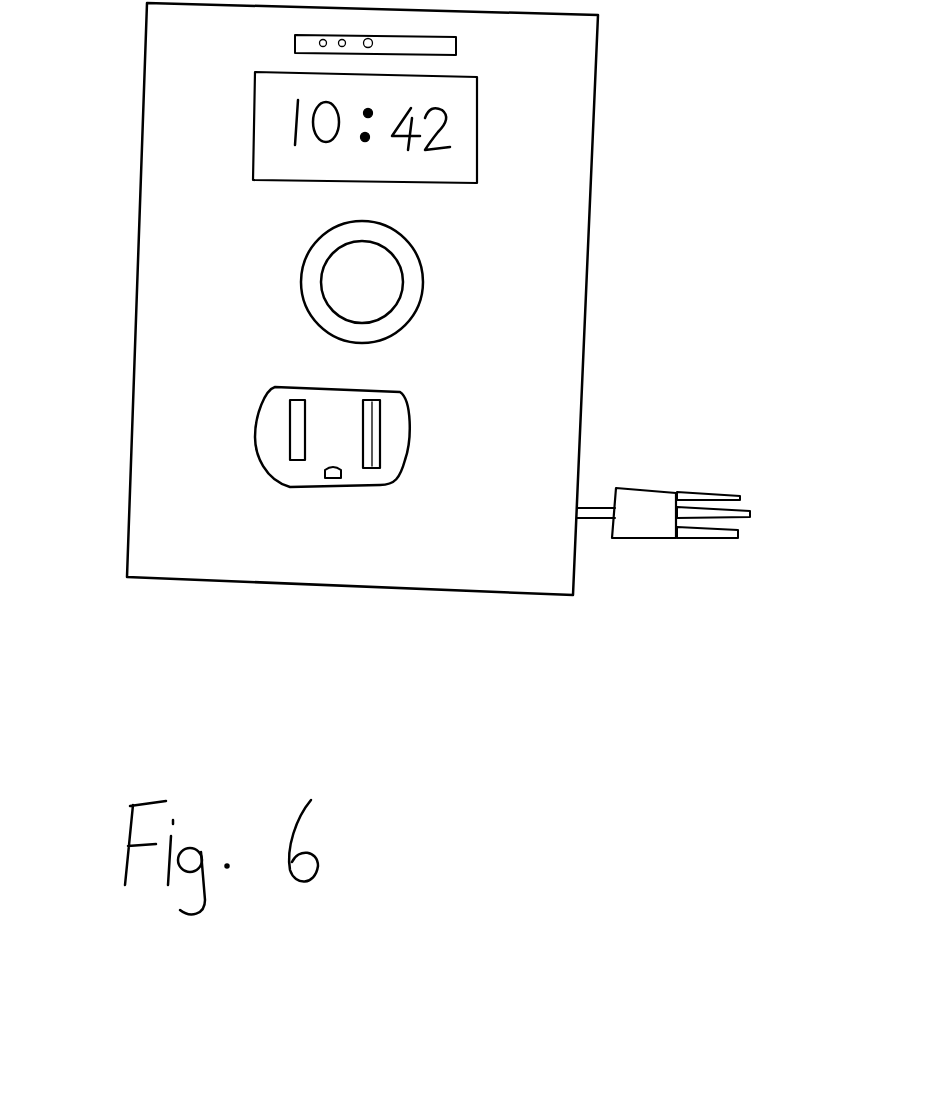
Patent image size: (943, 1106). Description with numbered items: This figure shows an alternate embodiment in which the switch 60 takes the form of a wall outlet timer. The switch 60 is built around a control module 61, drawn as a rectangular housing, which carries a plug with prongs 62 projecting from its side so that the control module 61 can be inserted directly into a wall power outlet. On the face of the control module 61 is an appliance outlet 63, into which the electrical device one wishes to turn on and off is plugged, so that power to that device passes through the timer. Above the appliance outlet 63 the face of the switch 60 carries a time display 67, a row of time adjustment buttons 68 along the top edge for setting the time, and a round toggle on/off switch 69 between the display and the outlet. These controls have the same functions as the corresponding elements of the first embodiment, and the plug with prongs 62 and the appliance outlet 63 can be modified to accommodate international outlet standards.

The switch 60 is at (119, 600).
The control module 61 is at (585, 91).
The plug with prongs 62 is at (645, 540).
The appliance outlet 63 is at (378, 485).
The time display 67 is at (477, 183).
The time adjustment buttons 68 is at (303, 46).
The toggle on/off switch 69 is at (377, 297).